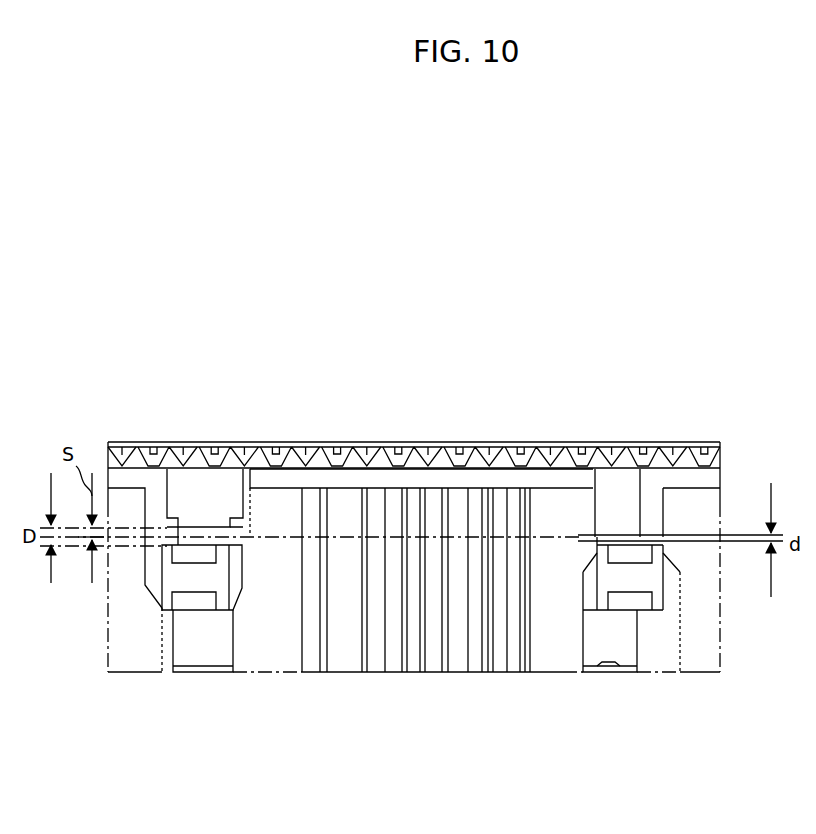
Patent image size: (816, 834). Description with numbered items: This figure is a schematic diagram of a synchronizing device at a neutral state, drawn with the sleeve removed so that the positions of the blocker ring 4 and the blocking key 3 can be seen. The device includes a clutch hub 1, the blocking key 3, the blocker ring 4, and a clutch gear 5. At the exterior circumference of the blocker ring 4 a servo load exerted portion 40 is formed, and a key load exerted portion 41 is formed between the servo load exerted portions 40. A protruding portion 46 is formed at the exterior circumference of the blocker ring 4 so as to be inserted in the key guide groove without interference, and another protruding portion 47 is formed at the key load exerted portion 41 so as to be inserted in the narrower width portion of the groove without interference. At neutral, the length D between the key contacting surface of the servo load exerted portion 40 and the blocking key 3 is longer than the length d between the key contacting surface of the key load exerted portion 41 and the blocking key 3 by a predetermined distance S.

The clutch hub 1 is at (395, 657).
The blocking key 3 is at (183, 582).
The blocker ring 4 is at (350, 480).
The clutch gear 5 is at (403, 440).
The servo load exerted portion 40 is at (200, 673).
The key load exerted portion 41 is at (607, 673).
The protruding portion 46 is at (206, 487).
The protruding portion 47 is at (615, 488).